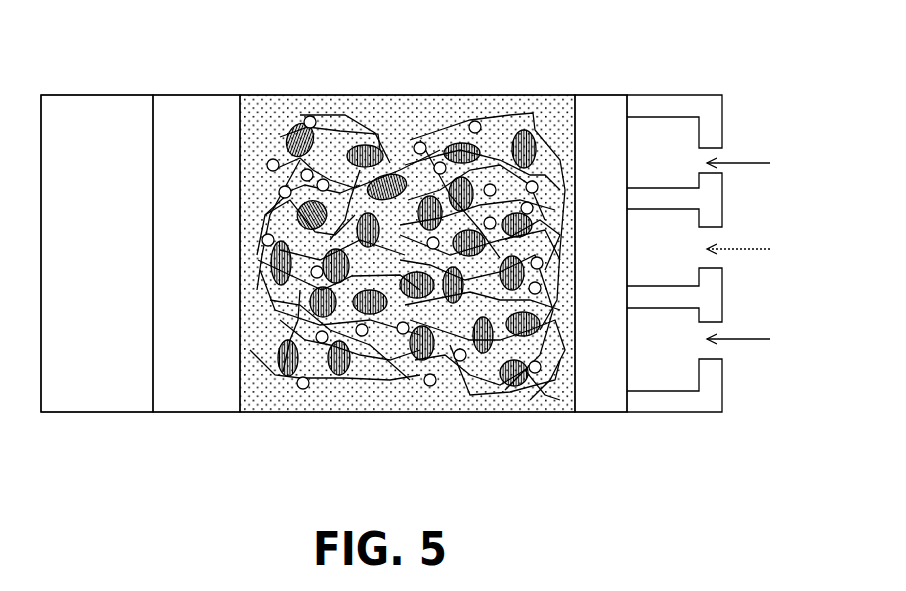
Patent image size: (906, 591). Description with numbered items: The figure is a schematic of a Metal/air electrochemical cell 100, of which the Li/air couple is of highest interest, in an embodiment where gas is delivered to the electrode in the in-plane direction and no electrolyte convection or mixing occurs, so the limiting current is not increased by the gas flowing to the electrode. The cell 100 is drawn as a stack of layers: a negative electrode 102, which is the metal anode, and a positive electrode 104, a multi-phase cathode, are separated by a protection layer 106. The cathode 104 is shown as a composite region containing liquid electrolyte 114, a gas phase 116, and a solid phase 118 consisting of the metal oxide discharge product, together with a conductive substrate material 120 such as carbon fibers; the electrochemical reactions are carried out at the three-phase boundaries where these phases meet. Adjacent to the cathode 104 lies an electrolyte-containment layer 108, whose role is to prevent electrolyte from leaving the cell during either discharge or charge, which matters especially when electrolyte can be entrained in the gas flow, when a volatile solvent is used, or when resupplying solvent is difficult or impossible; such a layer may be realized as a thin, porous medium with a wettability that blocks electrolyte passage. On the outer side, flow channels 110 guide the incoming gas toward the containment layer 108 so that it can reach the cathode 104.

The Metal/air electrochemical cell 100 is at (525, 73).
The negative electrode 102 is at (78, 100).
The positive electrode 104 is at (300, 96).
The protection layer 106 is at (222, 412).
The electrolyte-containment layer 108 is at (593, 412).
The flow channels 110 is at (703, 88).
The liquid electrolyte 114 is at (260, 400).
The gas phase 116 is at (417, 400).
The solid phase 118 is at (532, 400).
The conductive substrate material 120 is at (387, 97).